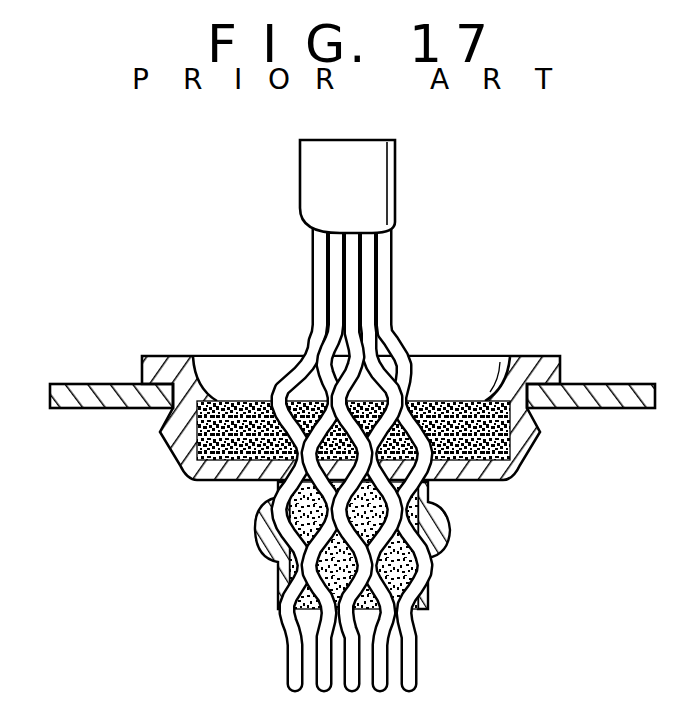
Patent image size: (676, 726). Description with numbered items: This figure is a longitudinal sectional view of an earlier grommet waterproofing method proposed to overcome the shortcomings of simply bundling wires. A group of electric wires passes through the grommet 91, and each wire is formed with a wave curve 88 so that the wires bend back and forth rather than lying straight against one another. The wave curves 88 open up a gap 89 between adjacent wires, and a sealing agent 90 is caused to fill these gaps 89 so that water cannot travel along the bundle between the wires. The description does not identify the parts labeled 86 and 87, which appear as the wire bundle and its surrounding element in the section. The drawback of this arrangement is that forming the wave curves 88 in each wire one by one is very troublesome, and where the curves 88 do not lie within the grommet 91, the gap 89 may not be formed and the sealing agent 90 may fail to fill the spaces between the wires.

The sheath 86 is at (395, 201).
The wire harness 87 is at (318, 323).
The wave curve 88 is at (351, 434).
The gap 89 is at (323, 556).
The sealing agent 90 is at (247, 402).
The grommet 91 is at (176, 464).